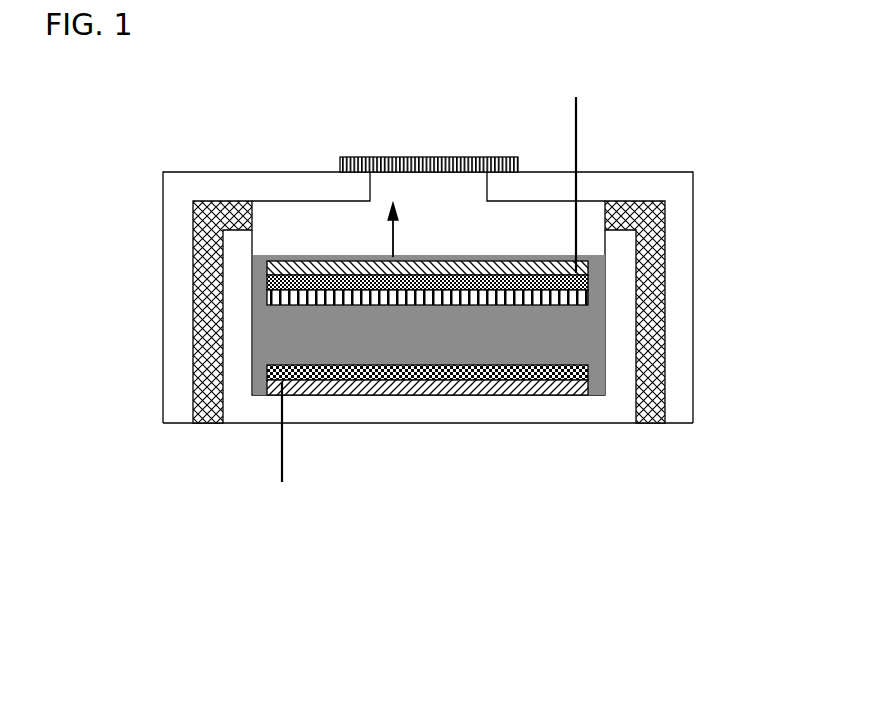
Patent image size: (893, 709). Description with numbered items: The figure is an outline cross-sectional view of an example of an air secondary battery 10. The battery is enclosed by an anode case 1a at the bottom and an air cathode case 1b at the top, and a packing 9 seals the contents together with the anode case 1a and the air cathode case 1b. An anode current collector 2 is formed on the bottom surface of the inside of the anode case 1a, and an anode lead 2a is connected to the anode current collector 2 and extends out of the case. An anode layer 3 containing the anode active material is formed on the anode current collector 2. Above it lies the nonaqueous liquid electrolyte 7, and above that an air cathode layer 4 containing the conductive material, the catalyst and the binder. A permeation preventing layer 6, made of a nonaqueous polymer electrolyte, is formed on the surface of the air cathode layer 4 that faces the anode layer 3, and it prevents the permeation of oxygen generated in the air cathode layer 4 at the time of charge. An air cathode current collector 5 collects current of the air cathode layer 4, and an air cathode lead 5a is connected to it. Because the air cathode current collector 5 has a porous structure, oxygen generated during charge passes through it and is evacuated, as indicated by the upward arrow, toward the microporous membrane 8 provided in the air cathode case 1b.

The air secondary battery 10 is at (678, 82).
The anode case 1a is at (605, 412).
The air cathode case 1b is at (678, 187).
The anode current collector 2 is at (517, 383).
The anode lead 2a is at (280, 455).
The anode layer 3 is at (408, 372).
The air cathode layer 4 is at (588, 283).
The air cathode current collector 5 is at (588, 268).
The air cathode lead 5a is at (577, 125).
The permeation preventing layer 6 is at (588, 299).
The nonaqueous liquid electrolyte 7 is at (590, 355).
The microporous membrane 8 is at (430, 157).
The packing 9 is at (650, 327).